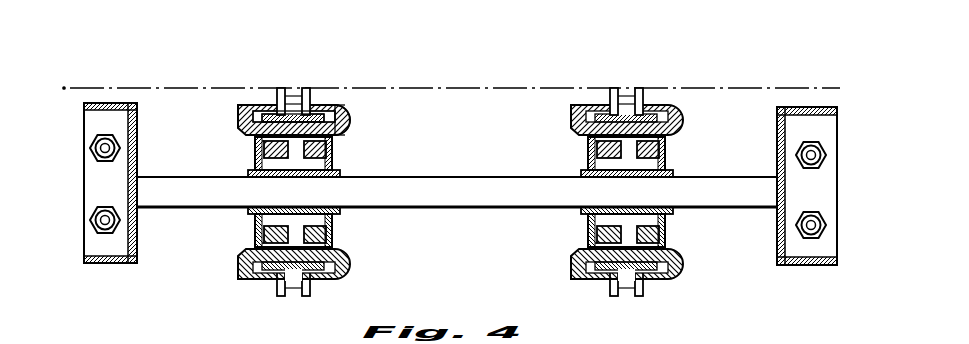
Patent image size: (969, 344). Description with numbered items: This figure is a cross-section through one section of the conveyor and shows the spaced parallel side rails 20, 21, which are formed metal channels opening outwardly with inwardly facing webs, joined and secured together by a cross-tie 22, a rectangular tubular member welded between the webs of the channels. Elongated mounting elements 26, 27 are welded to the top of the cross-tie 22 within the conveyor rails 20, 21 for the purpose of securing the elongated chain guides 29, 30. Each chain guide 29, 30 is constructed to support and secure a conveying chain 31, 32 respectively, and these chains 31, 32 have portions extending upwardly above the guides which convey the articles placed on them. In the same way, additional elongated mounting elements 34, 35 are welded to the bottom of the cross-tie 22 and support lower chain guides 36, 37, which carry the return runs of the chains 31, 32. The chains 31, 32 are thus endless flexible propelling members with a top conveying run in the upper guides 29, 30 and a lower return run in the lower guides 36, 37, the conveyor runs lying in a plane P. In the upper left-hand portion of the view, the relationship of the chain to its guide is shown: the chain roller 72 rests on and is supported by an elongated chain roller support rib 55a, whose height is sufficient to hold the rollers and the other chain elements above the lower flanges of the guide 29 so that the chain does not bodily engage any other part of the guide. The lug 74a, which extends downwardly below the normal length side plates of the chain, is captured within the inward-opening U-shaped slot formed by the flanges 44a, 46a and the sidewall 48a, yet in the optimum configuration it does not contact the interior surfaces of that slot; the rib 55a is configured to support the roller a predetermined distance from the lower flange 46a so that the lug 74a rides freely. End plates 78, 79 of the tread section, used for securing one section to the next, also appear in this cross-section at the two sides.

The plane P is at (190, 88).
The side rail 20 is at (118, 103).
The side rail 21 is at (835, 107).
The cross-tie 22 is at (470, 209).
The elongated mounting element 26 is at (338, 162).
The elongated mounting element 27 is at (672, 168).
The chain guide 29 is at (352, 108).
The chain guide 30 is at (685, 104).
The conveying chain 31 is at (298, 88).
The conveying chain 32 is at (625, 86).
The elongated mounting element 34 is at (340, 225).
The elongated mounting element 35 is at (586, 228).
The chain guide 36 is at (355, 270).
The chain guide 37 is at (575, 270).
The flange 44a is at (323, 111).
The lower flange 46a is at (352, 129).
The sidewall 48a is at (355, 111).
The elongated chain roller support rib 55a is at (292, 111).
The chain roller 72 is at (285, 104).
The lug 74a is at (328, 108).
The end plate 78 is at (100, 184).
The end plate 79 is at (822, 193).